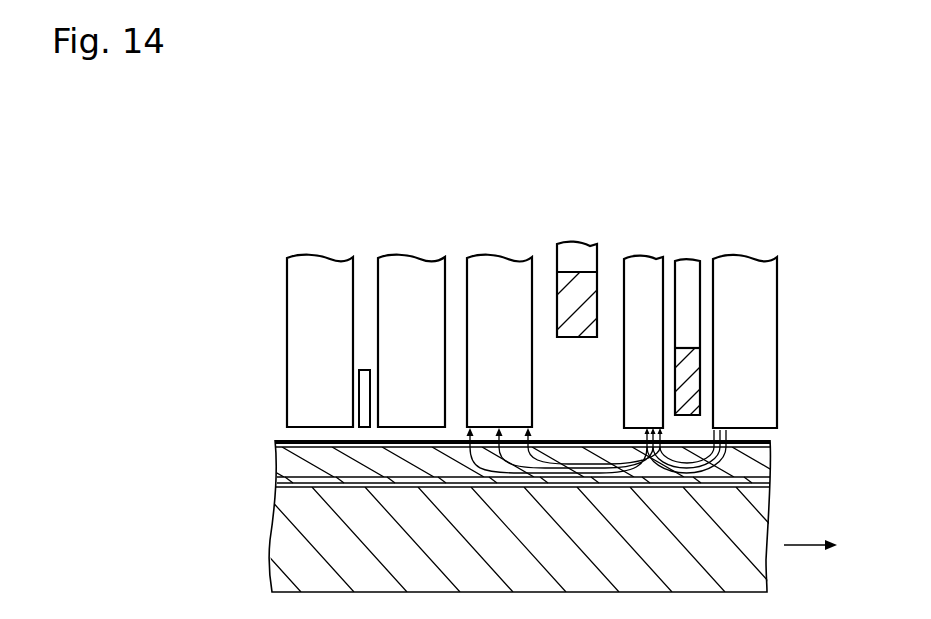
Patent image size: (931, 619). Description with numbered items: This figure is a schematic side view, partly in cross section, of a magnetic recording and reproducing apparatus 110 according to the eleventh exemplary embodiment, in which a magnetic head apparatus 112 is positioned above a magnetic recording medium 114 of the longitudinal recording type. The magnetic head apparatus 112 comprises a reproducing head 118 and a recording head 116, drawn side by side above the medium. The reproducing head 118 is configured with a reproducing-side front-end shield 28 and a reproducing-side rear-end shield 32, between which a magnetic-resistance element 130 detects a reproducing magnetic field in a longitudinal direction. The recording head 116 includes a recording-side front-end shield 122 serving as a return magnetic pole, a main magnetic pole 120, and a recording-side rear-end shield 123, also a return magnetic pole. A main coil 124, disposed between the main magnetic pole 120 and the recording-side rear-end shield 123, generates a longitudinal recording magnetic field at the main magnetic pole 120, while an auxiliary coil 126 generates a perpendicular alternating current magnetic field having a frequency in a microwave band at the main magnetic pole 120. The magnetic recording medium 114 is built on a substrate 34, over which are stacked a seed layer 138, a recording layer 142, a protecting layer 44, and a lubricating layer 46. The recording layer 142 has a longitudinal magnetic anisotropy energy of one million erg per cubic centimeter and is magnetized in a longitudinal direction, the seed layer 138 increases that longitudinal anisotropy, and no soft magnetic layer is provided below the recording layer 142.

The magnetic recording and reproducing apparatus 110 is at (527, 91).
The magnetic head apparatus 112 is at (263, 323).
The magnetic recording medium 114 is at (265, 507).
The recording head 116 is at (467, 218).
The reproducing head 118 is at (287, 218).
The reproducing-side front-end shield 28 is at (318, 257).
The reproducing-side rear-end shield 32 is at (405, 257).
The recording-side front-end shield 122 is at (494, 258).
The main magnetic pole 120 is at (636, 258).
The recording-side rear-end shield 123 is at (745, 258).
The auxiliary coil 126 is at (597, 313).
The main coil 124 is at (700, 330).
The magnetic-resistance element 130 is at (370, 390).
The lubricating layer 46 is at (772, 442).
The protecting layer 44 is at (772, 449).
The recording layer 142 is at (772, 468).
The seed layer 138 is at (772, 483).
The substrate 34 is at (766, 556).